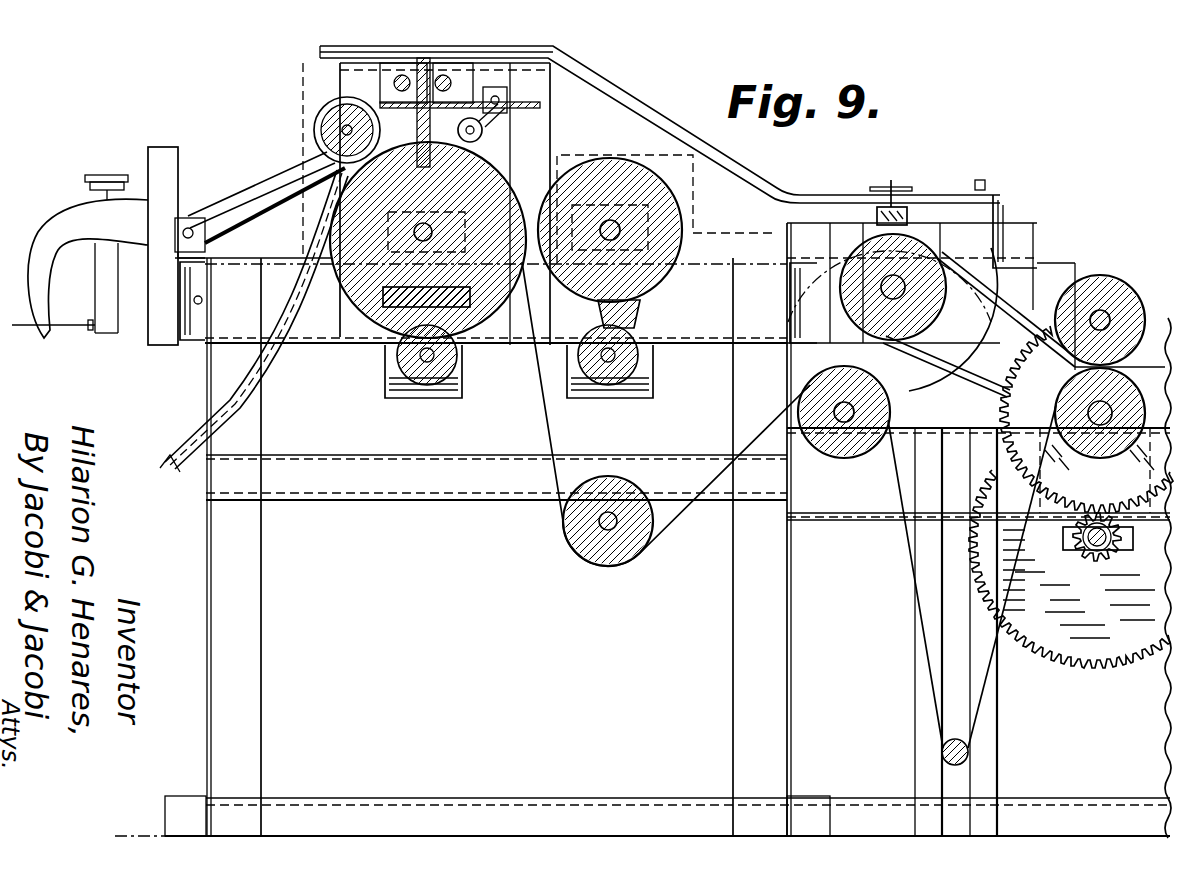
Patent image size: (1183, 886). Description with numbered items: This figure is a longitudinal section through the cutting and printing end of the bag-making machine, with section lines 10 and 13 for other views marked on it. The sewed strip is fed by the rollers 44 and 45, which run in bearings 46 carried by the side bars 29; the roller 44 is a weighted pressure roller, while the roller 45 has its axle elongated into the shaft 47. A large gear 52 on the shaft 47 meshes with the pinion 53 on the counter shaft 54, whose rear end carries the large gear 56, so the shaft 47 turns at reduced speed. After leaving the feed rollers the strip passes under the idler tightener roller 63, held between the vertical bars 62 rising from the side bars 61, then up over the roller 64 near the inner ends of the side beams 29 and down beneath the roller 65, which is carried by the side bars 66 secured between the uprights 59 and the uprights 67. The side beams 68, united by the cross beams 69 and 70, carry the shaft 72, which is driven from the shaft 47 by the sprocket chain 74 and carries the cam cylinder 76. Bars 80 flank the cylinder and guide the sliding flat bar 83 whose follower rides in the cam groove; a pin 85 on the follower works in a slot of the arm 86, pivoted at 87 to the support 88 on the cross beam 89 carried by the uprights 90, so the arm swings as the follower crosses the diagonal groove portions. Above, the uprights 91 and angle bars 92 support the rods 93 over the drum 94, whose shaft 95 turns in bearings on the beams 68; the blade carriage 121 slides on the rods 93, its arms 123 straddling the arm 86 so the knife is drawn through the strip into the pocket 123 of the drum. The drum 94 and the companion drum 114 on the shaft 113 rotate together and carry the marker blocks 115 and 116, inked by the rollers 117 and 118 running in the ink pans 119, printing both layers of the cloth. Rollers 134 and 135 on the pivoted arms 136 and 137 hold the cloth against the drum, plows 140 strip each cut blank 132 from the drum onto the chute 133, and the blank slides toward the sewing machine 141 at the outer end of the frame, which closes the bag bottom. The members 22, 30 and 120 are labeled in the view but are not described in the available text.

The section line 10 is at (275, 156).
The section line 13 is at (298, 112).
The frame rail 22 is at (745, 447).
The side bars 29 is at (873, 512).
The frame side 30 is at (1162, 700).
The pressure roller 44 is at (1115, 285).
The roller 45 is at (1123, 372).
The bearings 46 is at (1128, 300).
The shaft 47 is at (1108, 456).
The large gear 52 is at (1010, 412).
The pinion 53 is at (1104, 558).
The counter shaft 54 is at (1083, 560).
The large gear 56 is at (1056, 640).
The inner standards or uprights 59 is at (738, 637).
The side bars 61 is at (1025, 772).
The vertically extending strips or bars 62 is at (918, 668).
The idler roller 63 is at (940, 750).
The roller 64 is at (848, 455).
The roller 65 is at (605, 560).
The side bars 66 is at (475, 492).
The uprights 67 is at (263, 584).
The side beams 68 is at (703, 348).
The cross beam 69 is at (203, 305).
The cross beam 70 is at (788, 318).
The shaft 72 is at (935, 262).
The sprocket chain 74 is at (985, 345).
The cam cylinder 76 is at (935, 305).
The bars 80 is at (932, 210).
The flat rod or bar 83 is at (878, 212).
The pin 85 is at (892, 182).
The arm 86 is at (800, 199).
The pivot 87 is at (982, 190).
The support 88 is at (1012, 208).
The cross beam 89 is at (1060, 248).
The uprights 90 is at (1077, 272).
The uprights 91 is at (305, 198).
The angle bars 92 is at (518, 88).
The rods 93 is at (398, 84).
The cylinder or drum 94 is at (500, 186).
The shaft 95 is at (414, 233).
The shaft 113 is at (648, 222).
The drum 114 is at (620, 172).
The block 115 is at (385, 352).
The block 116 is at (638, 308).
The inking roller 117 is at (378, 388).
The inking roller 118 is at (608, 355).
The ink pans 119 is at (463, 384).
The post 120 is at (436, 131).
The carriage 121 is at (462, 102).
The groove or pocket 123 is at (322, 53).
The blank 132 is at (222, 400).
The chute 133 is at (250, 396).
The roller 134 is at (333, 130).
The roller 135 is at (540, 126).
The arm 136 is at (228, 199).
The arm 137 is at (525, 113).
The plows 140 is at (313, 305).
The sewing machine 141 is at (80, 210).